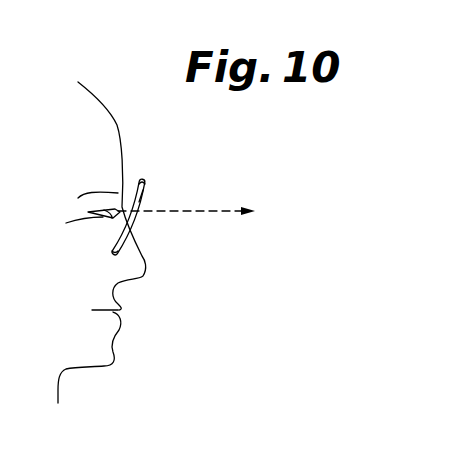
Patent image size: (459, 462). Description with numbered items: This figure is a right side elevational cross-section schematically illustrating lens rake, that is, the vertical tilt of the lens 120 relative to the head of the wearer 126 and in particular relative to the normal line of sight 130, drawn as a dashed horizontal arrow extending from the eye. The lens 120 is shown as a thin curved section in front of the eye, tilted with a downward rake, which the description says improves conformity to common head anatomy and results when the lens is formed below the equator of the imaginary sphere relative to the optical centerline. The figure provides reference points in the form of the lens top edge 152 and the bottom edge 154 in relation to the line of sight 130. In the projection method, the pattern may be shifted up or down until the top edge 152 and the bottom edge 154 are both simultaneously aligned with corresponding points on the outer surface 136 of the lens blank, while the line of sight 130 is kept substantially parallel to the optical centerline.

The lens 120 is at (138, 214).
The wearer 126 is at (107, 105).
The lens top edge 152 is at (142, 181).
The outer surface 136 is at (144, 200).
The bottom edge 154 is at (117, 249).
The normal line of sight 130 is at (222, 212).